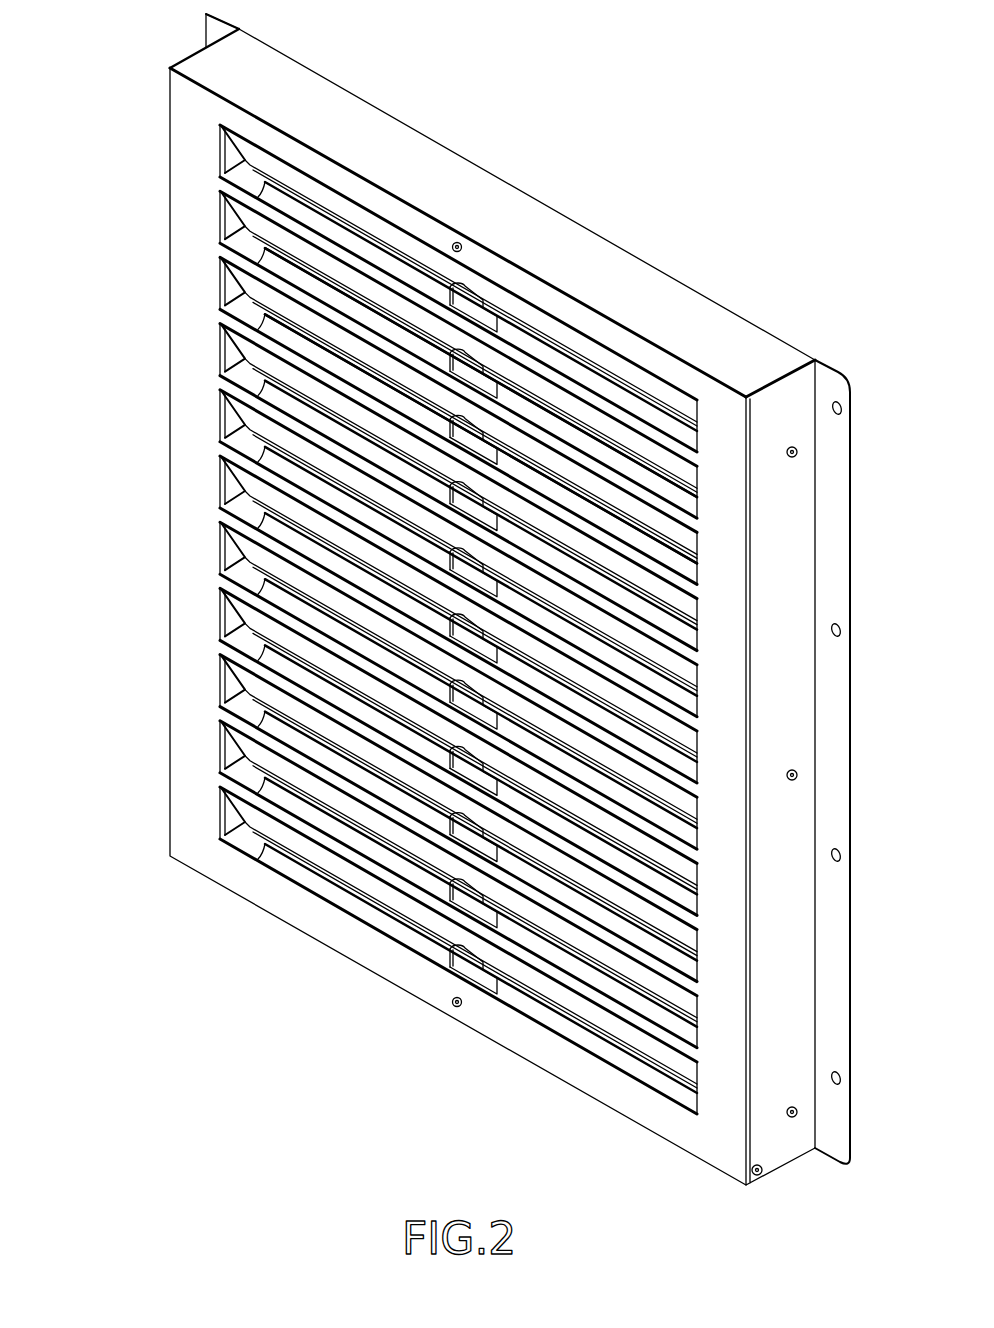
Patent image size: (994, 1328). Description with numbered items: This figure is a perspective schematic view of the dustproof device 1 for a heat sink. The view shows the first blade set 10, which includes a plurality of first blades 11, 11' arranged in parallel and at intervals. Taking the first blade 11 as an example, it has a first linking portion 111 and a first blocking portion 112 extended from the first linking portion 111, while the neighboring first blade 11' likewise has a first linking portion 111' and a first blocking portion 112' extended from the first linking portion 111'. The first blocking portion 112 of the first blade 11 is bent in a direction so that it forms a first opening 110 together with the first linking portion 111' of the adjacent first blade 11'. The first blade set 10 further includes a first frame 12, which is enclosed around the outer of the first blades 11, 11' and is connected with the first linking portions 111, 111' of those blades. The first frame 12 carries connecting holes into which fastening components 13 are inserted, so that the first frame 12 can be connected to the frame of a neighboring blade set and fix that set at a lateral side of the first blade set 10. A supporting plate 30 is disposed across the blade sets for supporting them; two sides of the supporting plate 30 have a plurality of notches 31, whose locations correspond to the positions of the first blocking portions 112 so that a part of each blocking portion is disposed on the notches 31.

The dustproof device 1 is at (466, 35).
The first blade set 10 is at (543, 198).
The first blade 11 is at (371, 321).
The first blade 11' is at (371, 685).
The first opening 110 is at (233, 232).
The first linking portion 111 is at (393, 288).
The first blocking portion 112 is at (393, 353).
The first linking portion 111' is at (393, 420).
The first blocking portion 112' is at (393, 425).
The first frame 12 is at (600, 263).
The fastening component 13 is at (456, 243).
The supporting plate 30 is at (462, 958).
The notch 31 is at (457, 1010).